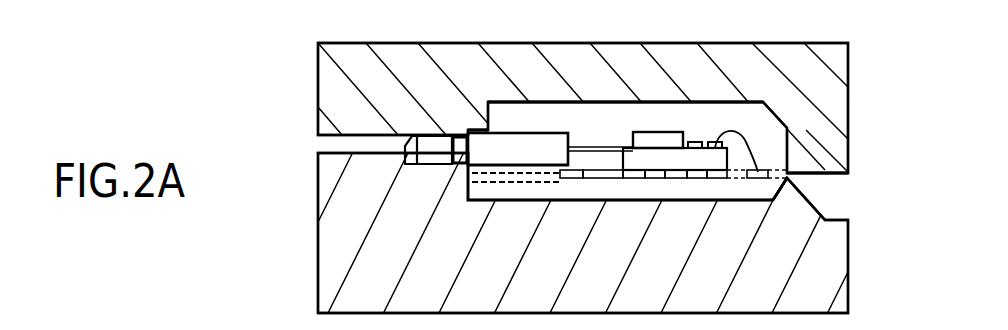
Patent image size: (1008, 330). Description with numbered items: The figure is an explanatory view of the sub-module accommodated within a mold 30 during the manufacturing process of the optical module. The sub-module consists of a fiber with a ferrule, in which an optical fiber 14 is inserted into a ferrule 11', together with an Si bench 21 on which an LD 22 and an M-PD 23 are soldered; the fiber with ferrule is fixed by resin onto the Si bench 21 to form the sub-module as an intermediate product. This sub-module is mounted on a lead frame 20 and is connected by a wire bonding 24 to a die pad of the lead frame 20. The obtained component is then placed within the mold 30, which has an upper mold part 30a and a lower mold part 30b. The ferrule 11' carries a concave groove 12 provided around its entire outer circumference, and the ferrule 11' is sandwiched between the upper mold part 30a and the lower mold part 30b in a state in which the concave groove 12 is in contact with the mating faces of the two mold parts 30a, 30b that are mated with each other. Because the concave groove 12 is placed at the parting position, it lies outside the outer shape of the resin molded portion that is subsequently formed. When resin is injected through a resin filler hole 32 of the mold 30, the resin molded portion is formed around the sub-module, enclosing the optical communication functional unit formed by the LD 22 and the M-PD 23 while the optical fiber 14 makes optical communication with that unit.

The ferrule 11' is at (427, 82).
The concave groove 12 is at (455, 134).
The optical fiber 14 is at (605, 143).
The lead frame 20 is at (572, 178).
The Si bench 21 is at (668, 160).
The LD 22 is at (657, 140).
The M-PD 23 is at (700, 157).
The wire bonding 24 is at (738, 150).
The mold 30 is at (247, 90).
The upper mold part 30a is at (336, 101).
The lower mold part 30b is at (336, 194).
The resin filler hole 32 is at (787, 178).